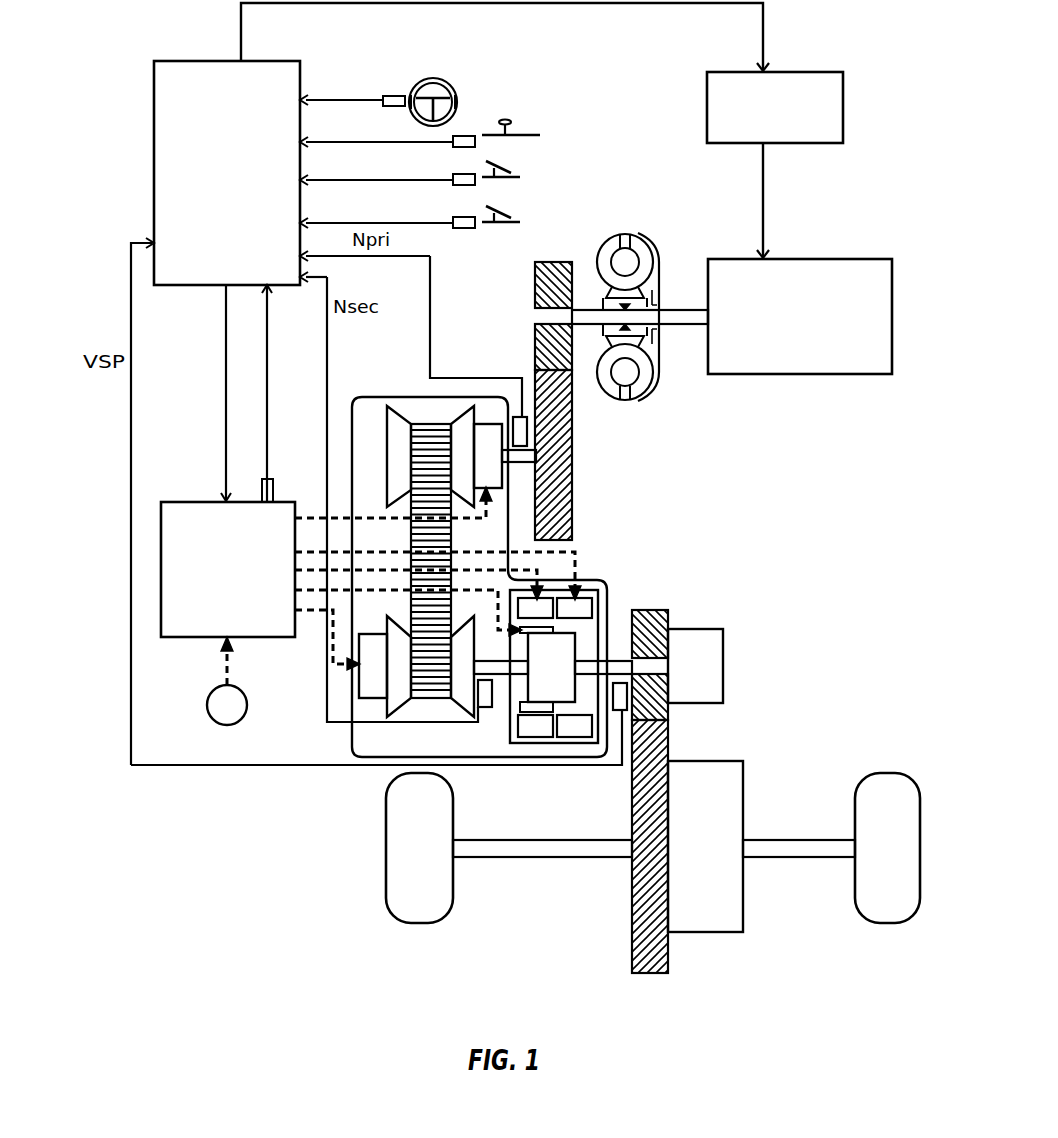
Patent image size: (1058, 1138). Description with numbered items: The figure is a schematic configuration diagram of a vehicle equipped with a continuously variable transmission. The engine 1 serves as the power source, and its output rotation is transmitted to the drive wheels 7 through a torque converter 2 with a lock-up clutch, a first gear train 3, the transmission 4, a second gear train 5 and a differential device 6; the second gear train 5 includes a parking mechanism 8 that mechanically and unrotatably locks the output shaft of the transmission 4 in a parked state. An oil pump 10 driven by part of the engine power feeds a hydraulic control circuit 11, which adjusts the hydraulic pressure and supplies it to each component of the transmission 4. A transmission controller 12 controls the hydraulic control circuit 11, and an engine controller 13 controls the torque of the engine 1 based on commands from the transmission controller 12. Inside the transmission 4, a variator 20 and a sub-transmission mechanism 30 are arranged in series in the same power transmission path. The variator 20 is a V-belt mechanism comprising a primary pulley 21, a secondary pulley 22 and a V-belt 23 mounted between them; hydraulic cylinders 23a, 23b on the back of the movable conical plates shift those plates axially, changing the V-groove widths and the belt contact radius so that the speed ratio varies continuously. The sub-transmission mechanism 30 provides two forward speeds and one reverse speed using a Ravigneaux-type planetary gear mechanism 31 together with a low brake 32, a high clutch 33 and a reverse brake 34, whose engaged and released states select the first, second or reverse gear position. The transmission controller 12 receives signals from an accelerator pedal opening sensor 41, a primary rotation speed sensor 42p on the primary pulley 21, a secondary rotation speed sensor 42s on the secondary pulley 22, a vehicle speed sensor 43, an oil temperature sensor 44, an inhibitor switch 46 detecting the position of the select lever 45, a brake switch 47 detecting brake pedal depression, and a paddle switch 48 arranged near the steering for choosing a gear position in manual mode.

The engine 1 is at (878, 278).
The torque converter 2 is at (657, 263).
The first gear train 3 is at (553, 258).
The transmission 4 is at (398, 393).
The second gear train 5 is at (650, 985).
The differential device 6 is at (705, 918).
The drive wheels 7 is at (420, 908).
The parking mechanism 8 is at (708, 657).
The oil pump 10 is at (207, 696).
The hydraulic control circuit 11 is at (181, 508).
The transmission controller 12 is at (287, 70).
The engine controller 13 is at (825, 80).
The variator 20 is at (406, 530).
The primary pulley 21 is at (400, 457).
The secondary pulley 22 is at (400, 684).
The V-belt 23 is at (433, 423).
The hydraulic cylinder 23a is at (485, 437).
The hydraulic cylinder 23b is at (366, 668).
The sub-transmission mechanism 30 is at (585, 623).
The Ravigneaux-type planetary gear mechanism 31 is at (555, 665).
The low brake 32 is at (538, 610).
The high clutch 33 is at (537, 703).
The reverse brake 34 is at (575, 610).
The accelerator pedal opening sensor 41 is at (465, 183).
The primary rotation speed sensor 42p is at (520, 432).
The secondary rotation speed sensor 42s is at (485, 697).
The vehicle speed sensor 43 is at (616, 710).
The oil temperature sensor 44 is at (270, 490).
The select lever 45 is at (507, 119).
The inhibitor switch 46 is at (465, 136).
The brake switch 47 is at (465, 228).
The paddle switch 48 is at (396, 96).